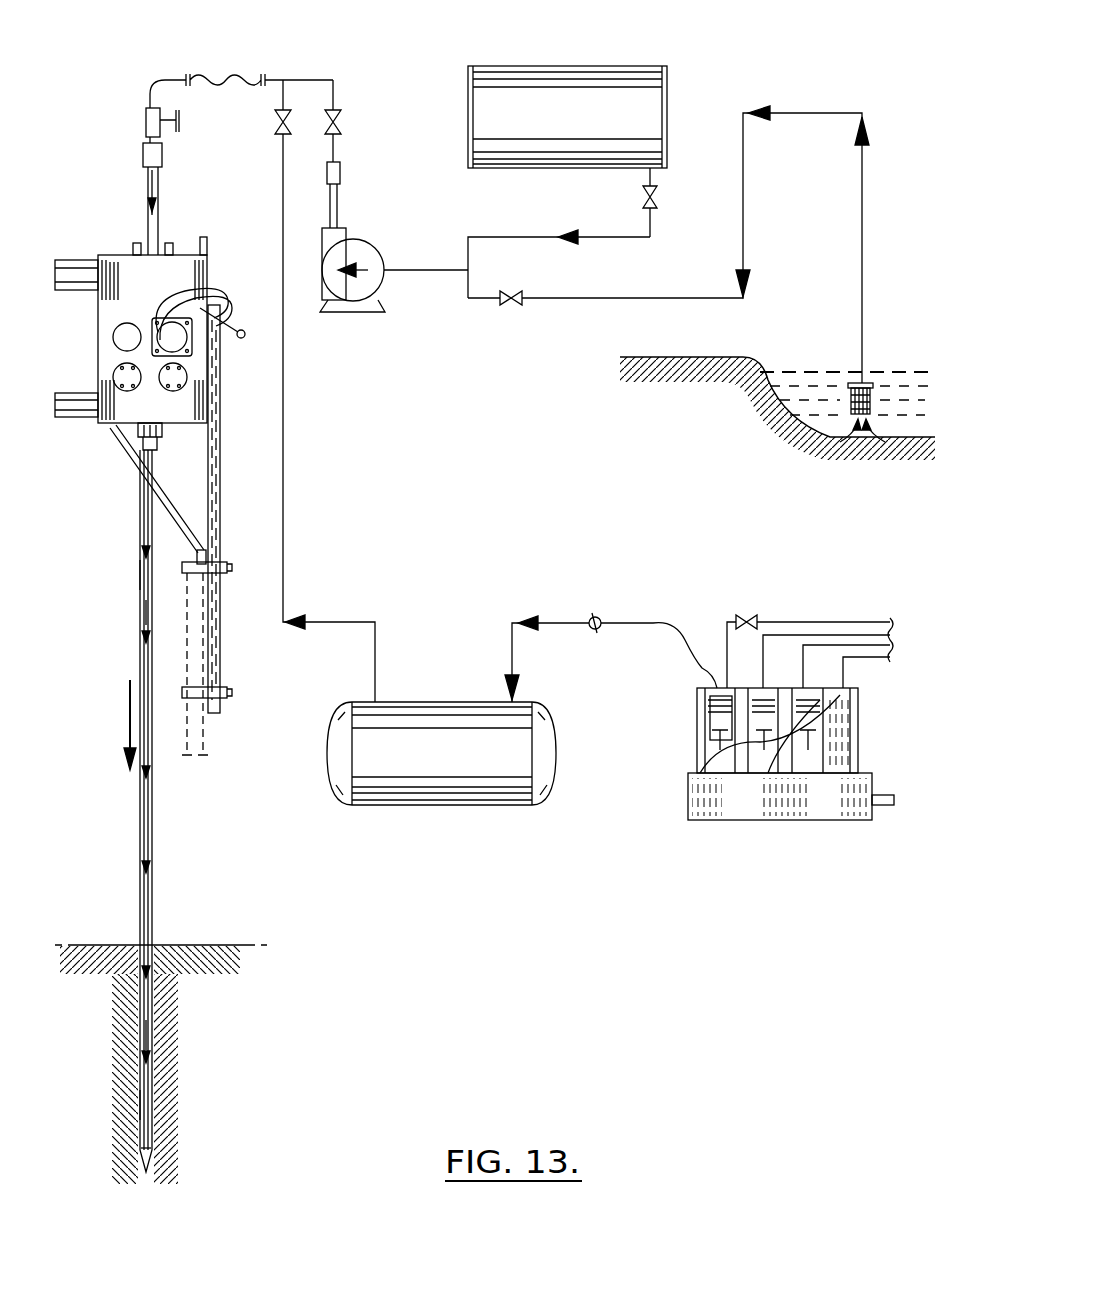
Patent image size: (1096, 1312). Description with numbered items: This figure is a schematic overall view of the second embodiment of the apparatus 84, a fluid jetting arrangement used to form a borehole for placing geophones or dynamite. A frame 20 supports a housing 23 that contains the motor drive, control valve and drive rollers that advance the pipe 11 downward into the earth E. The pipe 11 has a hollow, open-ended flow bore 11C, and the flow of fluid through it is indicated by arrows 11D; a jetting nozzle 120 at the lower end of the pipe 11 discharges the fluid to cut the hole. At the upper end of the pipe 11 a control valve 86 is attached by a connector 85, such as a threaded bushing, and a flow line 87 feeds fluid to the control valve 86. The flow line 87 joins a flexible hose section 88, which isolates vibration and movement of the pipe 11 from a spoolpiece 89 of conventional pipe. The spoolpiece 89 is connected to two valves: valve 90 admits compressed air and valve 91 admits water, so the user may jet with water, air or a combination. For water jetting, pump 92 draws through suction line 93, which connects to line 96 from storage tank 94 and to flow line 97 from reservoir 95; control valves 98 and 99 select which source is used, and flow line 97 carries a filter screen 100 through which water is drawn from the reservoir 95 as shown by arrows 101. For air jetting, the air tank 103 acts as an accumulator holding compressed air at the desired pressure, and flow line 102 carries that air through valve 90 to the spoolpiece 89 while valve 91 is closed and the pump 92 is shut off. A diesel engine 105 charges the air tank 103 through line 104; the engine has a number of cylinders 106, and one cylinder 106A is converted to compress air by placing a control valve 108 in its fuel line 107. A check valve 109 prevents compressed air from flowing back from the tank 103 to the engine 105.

The pipe 11 is at (158, 213).
The flow bore 11C is at (140, 572).
The arrows 11D is at (142, 612).
The frame 20 is at (221, 641).
The housing 23 is at (116, 300).
The apparatus 84 is at (720, 58).
The connector 85 is at (143, 155).
The control valve 86 is at (146, 123).
The flow line 87 is at (168, 82).
The flexible hose section 88 is at (244, 79).
The spoolpiece 89 is at (290, 79).
The valve 90 is at (276, 118).
The valve 91 is at (341, 122).
The pump 92 is at (358, 246).
The suction line 93 is at (441, 272).
The storage tank 94 is at (590, 66).
The reservoir 95 is at (880, 372).
The line 96 is at (546, 236).
The flow line 97 is at (626, 300).
The control valve 98 is at (656, 199).
The control valve 99 is at (504, 306).
The filter screen 100 is at (851, 400).
The arrows 101 is at (862, 430).
The flow line 102 is at (285, 408).
The air tank 103 is at (455, 788).
The line 104 is at (511, 648).
The diesel engine 105 is at (736, 808).
The cylinders 106 is at (776, 738).
The cylinder 106A is at (713, 717).
The fuel line 107 is at (876, 624).
The control valve 108 is at (742, 616).
The check valve 109 is at (599, 618).
The jetting nozzle 120 is at (152, 1156).
The earth E is at (185, 945).